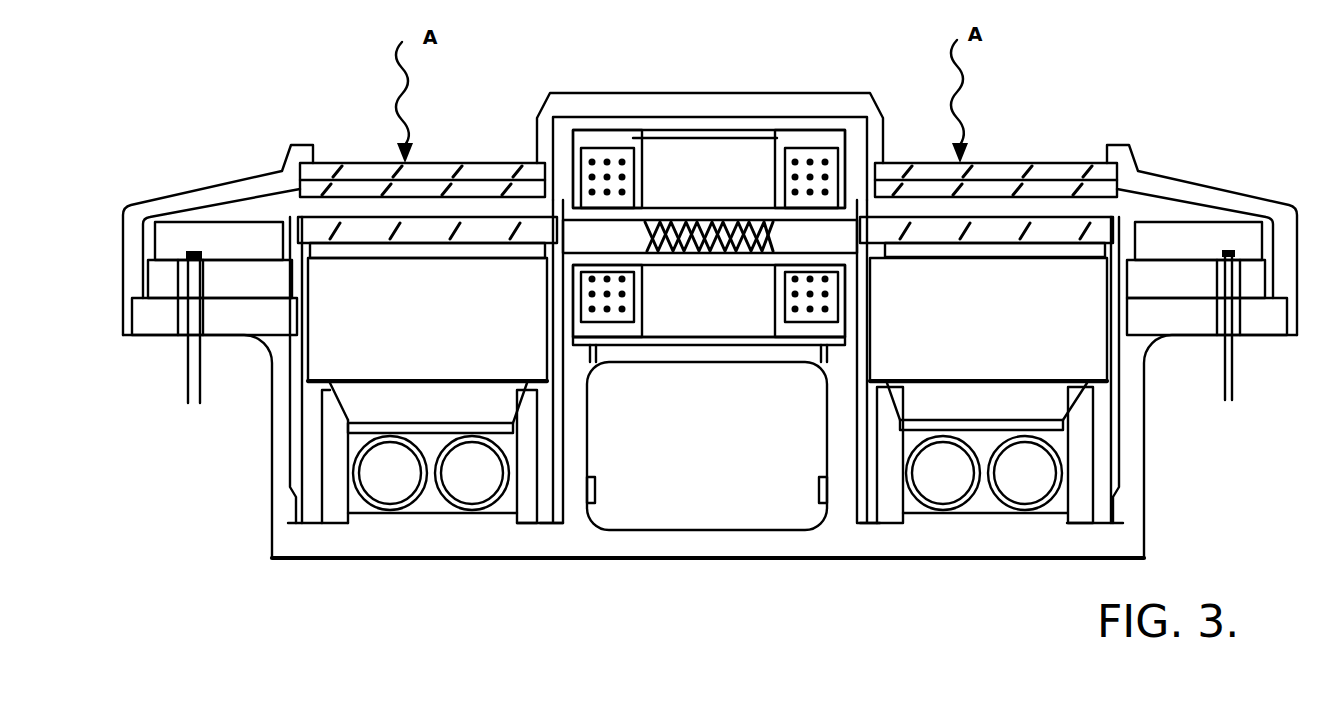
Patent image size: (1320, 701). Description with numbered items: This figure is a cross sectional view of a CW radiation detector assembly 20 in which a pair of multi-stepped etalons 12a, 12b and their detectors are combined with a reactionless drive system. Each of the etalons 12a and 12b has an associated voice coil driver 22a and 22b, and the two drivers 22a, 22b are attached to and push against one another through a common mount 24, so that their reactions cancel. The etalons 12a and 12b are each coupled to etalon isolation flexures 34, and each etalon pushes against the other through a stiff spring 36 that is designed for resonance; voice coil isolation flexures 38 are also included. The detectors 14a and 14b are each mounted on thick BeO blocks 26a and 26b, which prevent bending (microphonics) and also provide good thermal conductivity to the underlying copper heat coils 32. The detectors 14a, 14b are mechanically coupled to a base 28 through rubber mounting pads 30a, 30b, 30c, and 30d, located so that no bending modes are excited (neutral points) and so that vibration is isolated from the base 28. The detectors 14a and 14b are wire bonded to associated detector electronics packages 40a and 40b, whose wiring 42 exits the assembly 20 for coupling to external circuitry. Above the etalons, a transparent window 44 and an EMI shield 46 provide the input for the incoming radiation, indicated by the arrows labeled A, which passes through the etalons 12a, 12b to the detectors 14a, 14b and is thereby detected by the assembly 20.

The assembly 20 is at (1175, 124).
The etalon 12a is at (418, 226).
The etalon 12b is at (996, 159).
The detector 14a is at (372, 248).
The detector 14b is at (1063, 248).
The voice coil driver 22a is at (620, 160).
The voice coil driver 22b is at (818, 165).
The common mount 24 is at (758, 138).
The BeO block 26a is at (333, 362).
The BeO block 26b is at (1093, 363).
The base 28 is at (575, 562).
The rubber mounting pad 30a is at (340, 413).
The rubber mounting pad 30b is at (513, 495).
The rubber mounting pad 30c is at (887, 386).
The rubber mounting pad 30d is at (1077, 386).
The copper heat coils 32 is at (453, 490).
The etalon isolation flexures 34 is at (325, 480).
The stiff spring 36 is at (690, 222).
The voice coil isolation flexures 38 is at (817, 477).
The detector electronics package 40a is at (222, 240).
The detector electronics package 40b is at (1173, 237).
The wiring 42 is at (190, 402).
The transparent window 44 is at (1010, 178).
The EMI shield 46 is at (1040, 196).